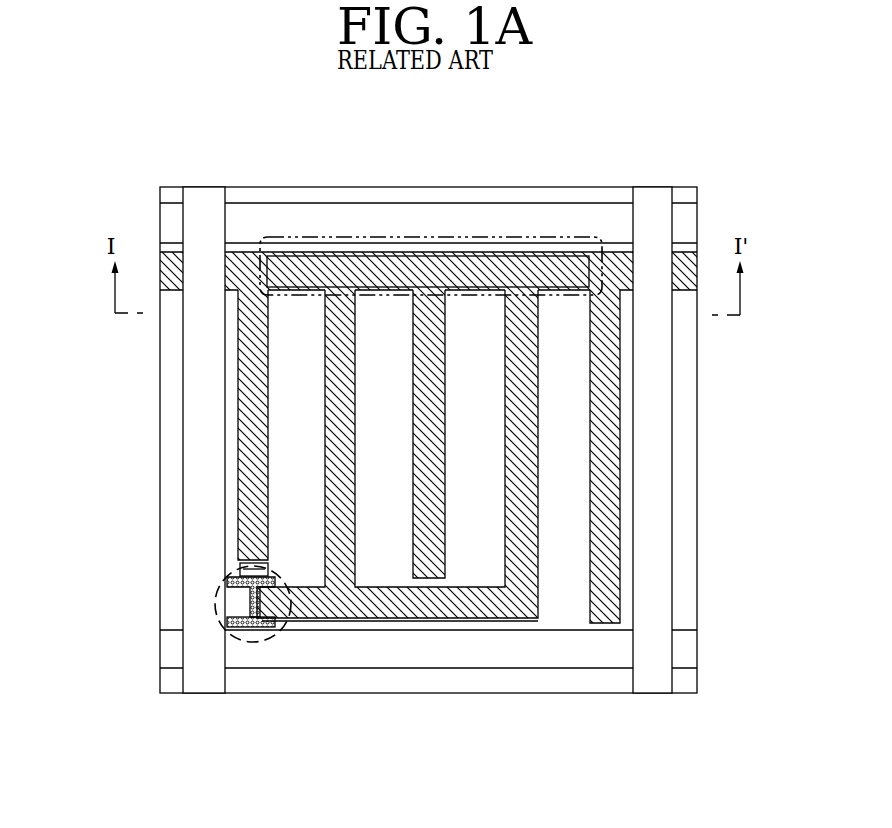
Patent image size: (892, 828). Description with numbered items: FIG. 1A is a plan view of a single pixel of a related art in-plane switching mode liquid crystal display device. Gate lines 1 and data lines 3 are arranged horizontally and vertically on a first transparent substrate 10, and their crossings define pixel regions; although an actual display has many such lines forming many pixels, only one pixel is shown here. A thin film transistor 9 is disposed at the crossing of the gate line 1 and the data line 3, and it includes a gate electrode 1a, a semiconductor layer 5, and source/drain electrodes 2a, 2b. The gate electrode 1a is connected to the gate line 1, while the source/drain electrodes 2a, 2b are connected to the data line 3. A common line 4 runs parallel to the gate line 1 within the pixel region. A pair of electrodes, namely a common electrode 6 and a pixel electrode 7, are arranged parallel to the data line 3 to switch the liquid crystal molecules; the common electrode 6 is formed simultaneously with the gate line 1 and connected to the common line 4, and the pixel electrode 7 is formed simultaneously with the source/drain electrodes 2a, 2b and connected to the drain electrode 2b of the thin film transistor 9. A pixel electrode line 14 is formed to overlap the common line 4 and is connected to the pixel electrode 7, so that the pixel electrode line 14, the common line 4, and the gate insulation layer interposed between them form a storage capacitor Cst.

The gate line 1 is at (380, 663).
The gate electrode 1a is at (233, 570).
The source electrode 2a is at (238, 600).
The drain electrode 2b is at (266, 624).
The data line 3 is at (202, 690).
The common line 4 is at (173, 250).
The semiconductor layer 5 is at (253, 627).
The common electrode 6 is at (250, 310).
The pixel electrode 7 is at (339, 310).
The thin film transistor 9 is at (214, 629).
The first transparent substrate 10 is at (700, 557).
The pixel electrode line 14 is at (478, 262).
The storage capacitor Cst is at (386, 237).